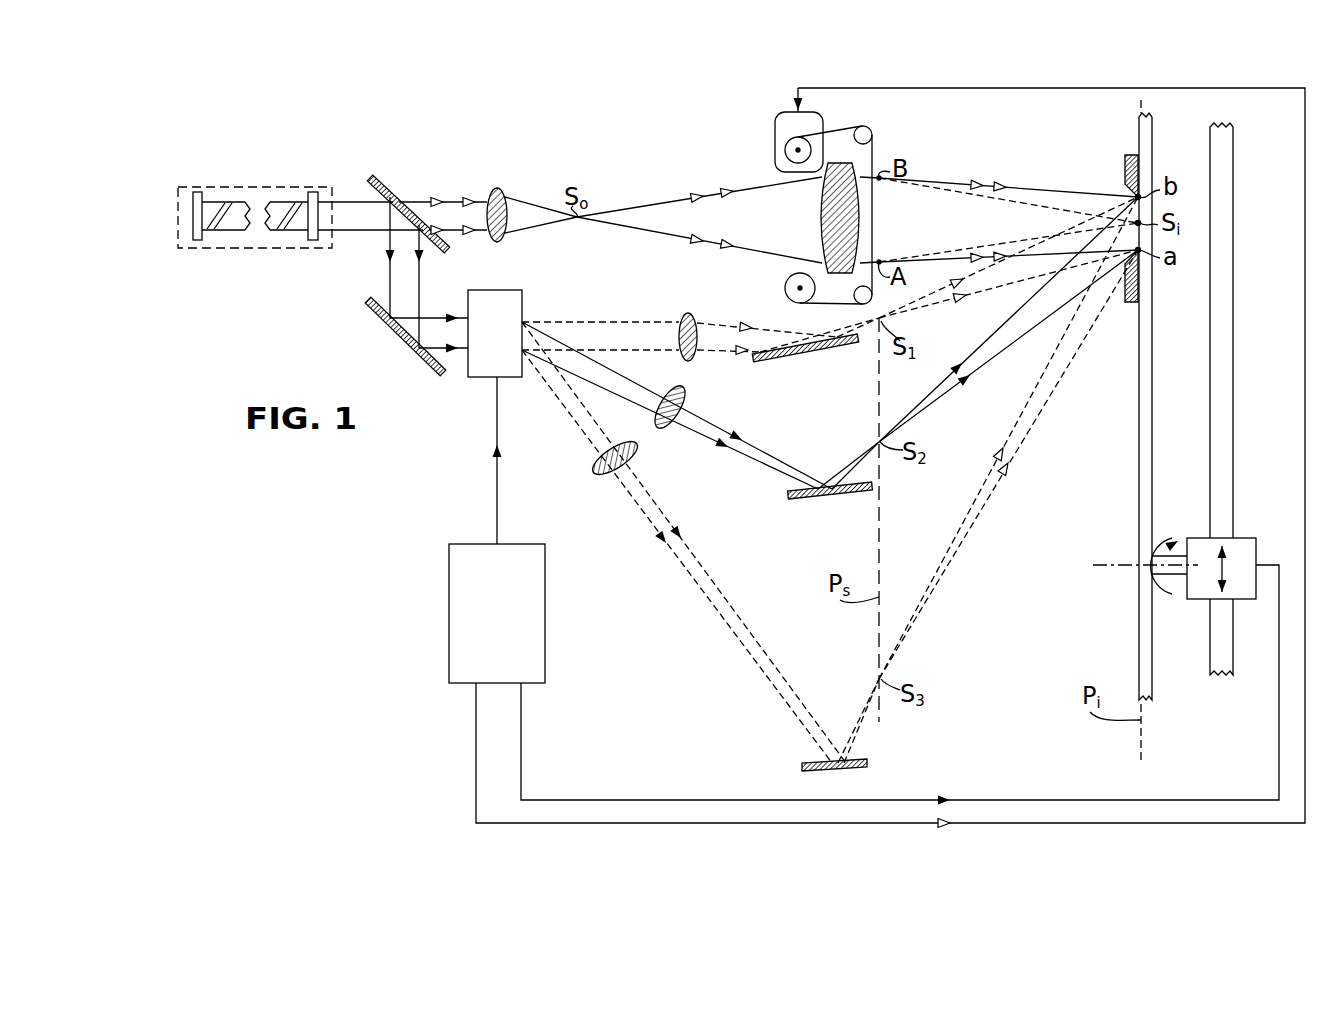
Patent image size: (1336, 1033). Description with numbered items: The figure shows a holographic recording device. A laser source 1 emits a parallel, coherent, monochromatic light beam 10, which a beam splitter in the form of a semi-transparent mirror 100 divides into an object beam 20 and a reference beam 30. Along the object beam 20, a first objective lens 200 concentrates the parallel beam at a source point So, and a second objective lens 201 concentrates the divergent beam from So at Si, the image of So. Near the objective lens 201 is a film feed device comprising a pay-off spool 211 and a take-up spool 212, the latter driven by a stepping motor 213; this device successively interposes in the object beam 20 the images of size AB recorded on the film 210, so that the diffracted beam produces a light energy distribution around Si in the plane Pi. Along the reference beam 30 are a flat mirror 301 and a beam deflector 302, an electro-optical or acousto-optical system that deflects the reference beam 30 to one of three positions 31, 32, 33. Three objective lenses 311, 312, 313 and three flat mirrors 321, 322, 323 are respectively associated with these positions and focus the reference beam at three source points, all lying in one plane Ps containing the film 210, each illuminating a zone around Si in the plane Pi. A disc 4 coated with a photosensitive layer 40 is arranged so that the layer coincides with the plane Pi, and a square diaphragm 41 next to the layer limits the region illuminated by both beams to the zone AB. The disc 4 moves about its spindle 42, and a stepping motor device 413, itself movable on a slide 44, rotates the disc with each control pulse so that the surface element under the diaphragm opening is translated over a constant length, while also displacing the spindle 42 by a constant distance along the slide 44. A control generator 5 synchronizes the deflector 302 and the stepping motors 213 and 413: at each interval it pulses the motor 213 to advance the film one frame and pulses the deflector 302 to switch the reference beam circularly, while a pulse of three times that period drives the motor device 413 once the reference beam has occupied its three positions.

The laser source 1 is at (242, 189).
The light beam 10 is at (356, 214).
The semi-transparent mirror 100 is at (392, 183).
The object beam 20 is at (425, 213).
The first objective lens 200 is at (504, 188).
The reference beam 30 is at (398, 276).
The flat mirror 301 is at (423, 355).
The beam deflector 302 is at (500, 297).
The first position of the reference beam 31 is at (608, 321).
The objective lens 311 is at (688, 318).
The second position of the reference beam 32 is at (618, 395).
The objective lens 312 is at (688, 395).
The third position of the reference beam 33 is at (591, 422).
The objective lens 313 is at (637, 448).
The flat mirror 321 is at (845, 352).
The flat mirror 322 is at (900, 500).
The flat mirror 323 is at (868, 762).
The stepping motor 213 is at (779, 120).
The take-up spool 212 is at (786, 160).
The film 210 is at (880, 156).
The pay-off spool 211 is at (795, 299).
The second objective lens 201 is at (822, 254).
The square diaphragm 41 is at (1125, 172).
The disc 4 is at (1139, 448).
The photosensitive layer 40 is at (1139, 405).
The slide 44 is at (1215, 457).
The spindle 42 is at (1128, 565).
The stepping motor device 413 is at (1205, 588).
The control generator 5 is at (545, 620).